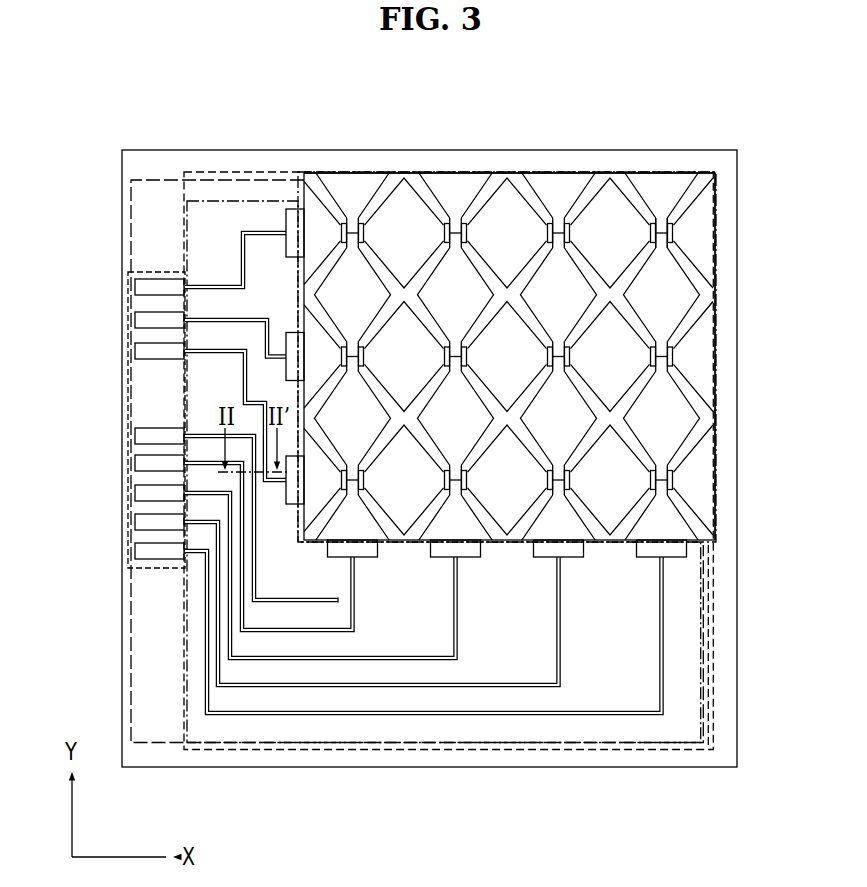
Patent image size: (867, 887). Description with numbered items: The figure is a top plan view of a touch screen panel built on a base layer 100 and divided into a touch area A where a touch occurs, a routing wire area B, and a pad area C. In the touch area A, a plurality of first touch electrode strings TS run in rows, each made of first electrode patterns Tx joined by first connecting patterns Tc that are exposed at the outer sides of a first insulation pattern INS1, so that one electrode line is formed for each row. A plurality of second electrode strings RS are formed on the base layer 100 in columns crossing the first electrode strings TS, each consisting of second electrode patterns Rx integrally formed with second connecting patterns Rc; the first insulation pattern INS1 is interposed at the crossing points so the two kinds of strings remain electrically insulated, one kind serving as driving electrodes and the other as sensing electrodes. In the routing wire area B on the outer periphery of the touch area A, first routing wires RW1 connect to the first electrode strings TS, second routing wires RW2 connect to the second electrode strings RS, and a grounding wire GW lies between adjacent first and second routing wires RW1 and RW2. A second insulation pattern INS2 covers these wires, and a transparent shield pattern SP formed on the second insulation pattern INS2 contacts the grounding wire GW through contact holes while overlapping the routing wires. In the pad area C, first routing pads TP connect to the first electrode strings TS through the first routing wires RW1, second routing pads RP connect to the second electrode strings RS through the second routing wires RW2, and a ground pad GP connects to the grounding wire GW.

The base layer 100 is at (666, 770).
The second insulation pattern INS2 is at (157, 178).
The routing wire area B is at (250, 166).
The shield pattern SP is at (254, 198).
The first insulation pattern INS1 is at (581, 218).
The pad area C is at (157, 265).
The first routing wires RW1 is at (217, 248).
The grounding wire GW is at (291, 602).
The second routing wires RW2 is at (300, 733).
The first routing pads TP is at (113, 280).
The ground pad GP is at (152, 427).
The second routing pads RP is at (113, 457).
The touch area A is at (512, 165).
The first electrode patterns Tx is at (402, 212).
The first connecting patterns Tc is at (443, 208).
The second electrode patterns Rx is at (667, 294).
The second connecting patterns Rc is at (673, 218).
The second electrode strings RS is at (660, 166).
The first touch electrode strings TS is at (725, 232).